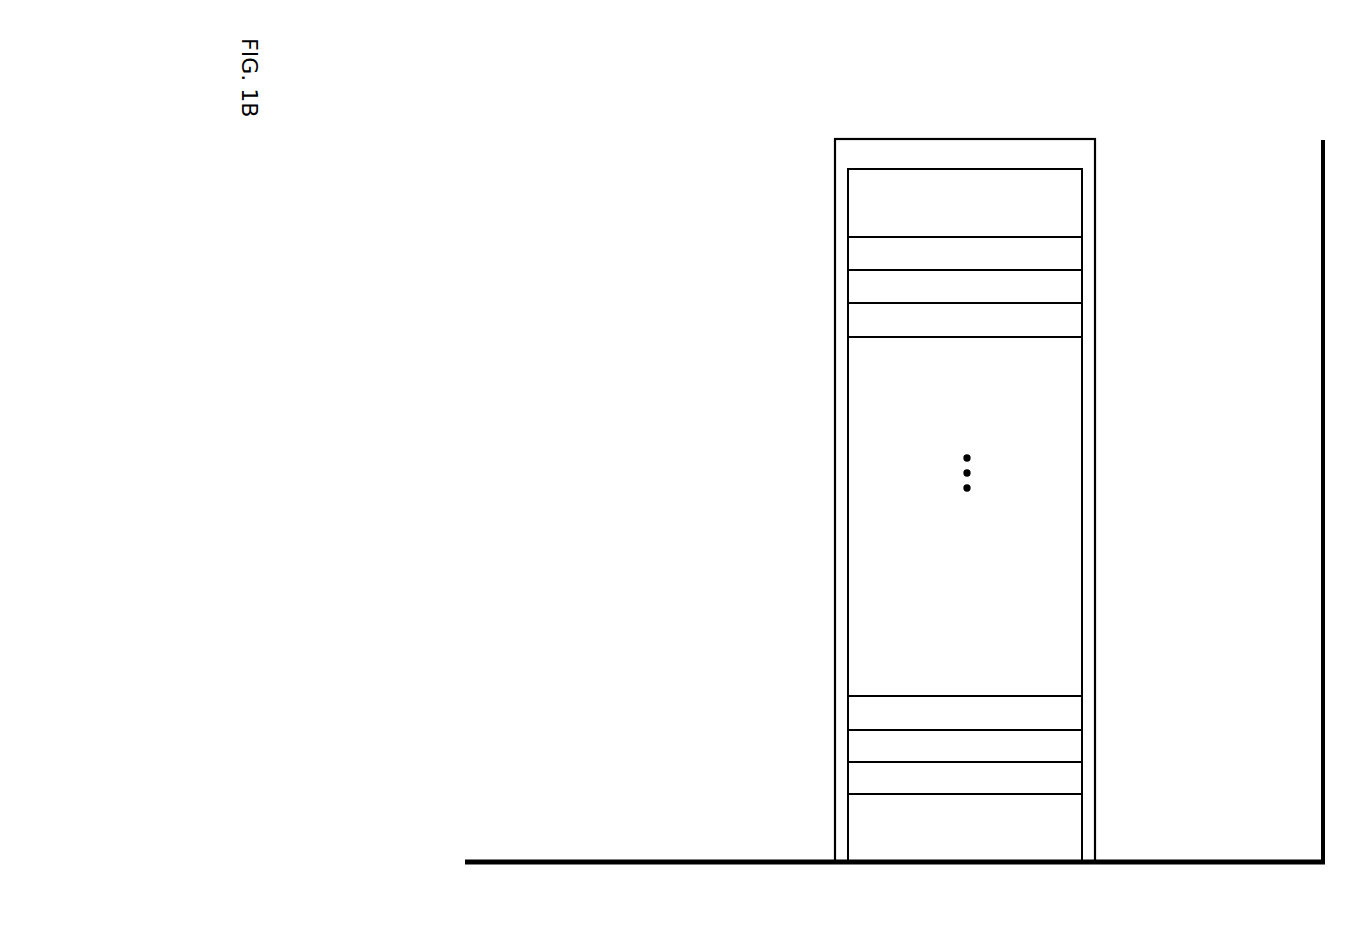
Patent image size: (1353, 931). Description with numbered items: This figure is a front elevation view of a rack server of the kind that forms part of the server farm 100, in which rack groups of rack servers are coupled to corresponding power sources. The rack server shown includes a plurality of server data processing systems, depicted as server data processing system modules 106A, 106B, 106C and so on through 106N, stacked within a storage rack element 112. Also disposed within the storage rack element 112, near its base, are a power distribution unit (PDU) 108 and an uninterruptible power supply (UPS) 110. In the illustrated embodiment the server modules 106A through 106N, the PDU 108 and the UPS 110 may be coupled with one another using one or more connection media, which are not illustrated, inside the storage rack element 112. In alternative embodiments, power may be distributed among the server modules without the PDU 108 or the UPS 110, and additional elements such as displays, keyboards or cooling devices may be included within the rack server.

The server farm 100 is at (869, 451).
The server data processing system module 106A is at (884, 207).
The server data processing system module 106B is at (886, 239).
The server data processing system module 106C is at (884, 272).
The server data processing system module 106N is at (884, 666).
The power distribution unit (PDU) 108 is at (1038, 732).
The uninterruptible power supply (UPS) 110 is at (1084, 779).
The storage rack element 112 is at (1015, 446).